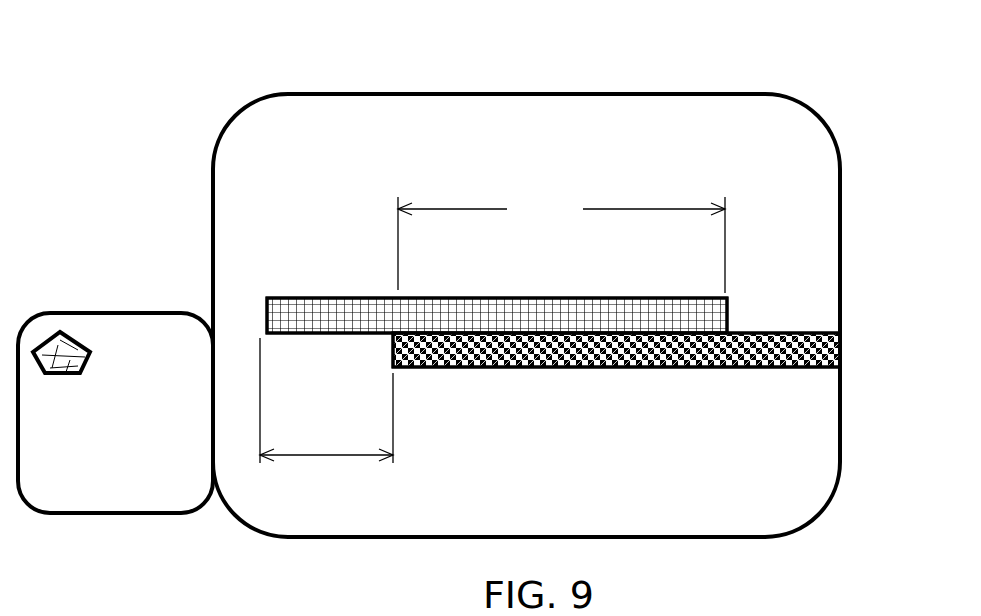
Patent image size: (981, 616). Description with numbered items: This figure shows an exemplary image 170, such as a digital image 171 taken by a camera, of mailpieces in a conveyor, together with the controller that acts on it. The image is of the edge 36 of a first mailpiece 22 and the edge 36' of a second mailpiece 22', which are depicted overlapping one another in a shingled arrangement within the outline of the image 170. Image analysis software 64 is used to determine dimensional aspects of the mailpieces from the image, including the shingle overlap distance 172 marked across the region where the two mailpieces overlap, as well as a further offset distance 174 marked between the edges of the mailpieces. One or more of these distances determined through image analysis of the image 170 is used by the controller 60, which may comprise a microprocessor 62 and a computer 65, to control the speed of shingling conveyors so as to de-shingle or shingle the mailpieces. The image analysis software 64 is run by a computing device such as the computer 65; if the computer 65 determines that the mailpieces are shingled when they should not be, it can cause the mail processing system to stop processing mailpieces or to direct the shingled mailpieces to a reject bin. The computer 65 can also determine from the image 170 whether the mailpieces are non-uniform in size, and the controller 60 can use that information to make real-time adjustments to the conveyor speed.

The image 170 is at (765, 165).
The digital image 171 is at (808, 218).
The shingle overlap distance 172 is at (561, 245).
The offset length 174 is at (326, 415).
The first mailpiece 22 is at (483, 273).
The edge 36 is at (497, 272).
The second mailpiece 22' is at (616, 398).
The edge 36' is at (616, 393).
The controller 60 is at (88, 328).
The microprocessor 62 is at (55, 332).
The image analysis software 64 is at (125, 367).
The computer 65 is at (142, 457).